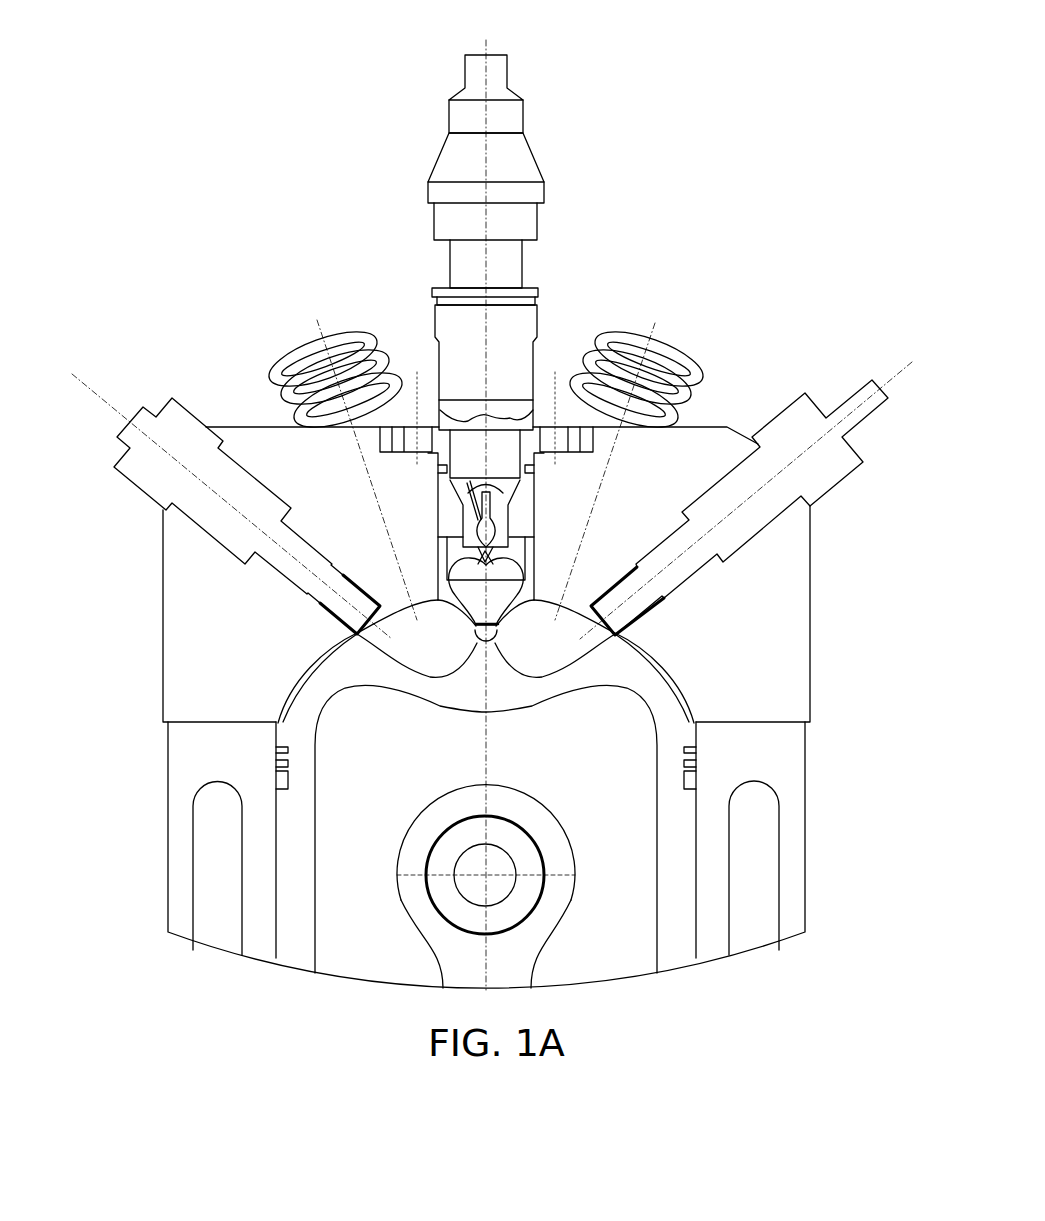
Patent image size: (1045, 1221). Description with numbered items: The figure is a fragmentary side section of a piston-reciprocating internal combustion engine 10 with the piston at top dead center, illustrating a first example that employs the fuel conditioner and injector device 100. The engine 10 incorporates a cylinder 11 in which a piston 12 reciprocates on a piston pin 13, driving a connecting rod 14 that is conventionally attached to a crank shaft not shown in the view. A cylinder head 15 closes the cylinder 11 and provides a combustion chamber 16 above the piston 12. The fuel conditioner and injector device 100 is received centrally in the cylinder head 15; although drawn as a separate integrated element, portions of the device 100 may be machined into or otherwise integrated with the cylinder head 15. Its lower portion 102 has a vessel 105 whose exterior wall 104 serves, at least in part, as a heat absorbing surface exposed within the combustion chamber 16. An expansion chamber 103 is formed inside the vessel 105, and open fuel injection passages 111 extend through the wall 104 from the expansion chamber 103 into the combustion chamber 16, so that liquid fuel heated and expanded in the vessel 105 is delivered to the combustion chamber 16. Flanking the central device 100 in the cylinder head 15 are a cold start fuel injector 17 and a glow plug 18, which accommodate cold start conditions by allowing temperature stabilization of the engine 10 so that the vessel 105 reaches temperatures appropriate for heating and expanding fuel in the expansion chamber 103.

The engine 10 is at (318, 318).
The cylinder 11 is at (773, 753).
The piston 12 is at (625, 769).
The piston pin 13 is at (452, 857).
The connecting rod 14 is at (528, 955).
The cylinder head 15 is at (768, 680).
The combustion chamber 16 is at (446, 647).
The cold start fuel injector 17 is at (153, 470).
The glow plug 18 is at (803, 414).
The fuel conditioner and injector device 100 is at (508, 160).
The lower portion 102 is at (515, 520).
The expansion chamber 103 is at (493, 597).
The exterior wall 104 is at (513, 607).
The vessel 105 is at (442, 569).
The fuel injection passages 111 is at (497, 627).